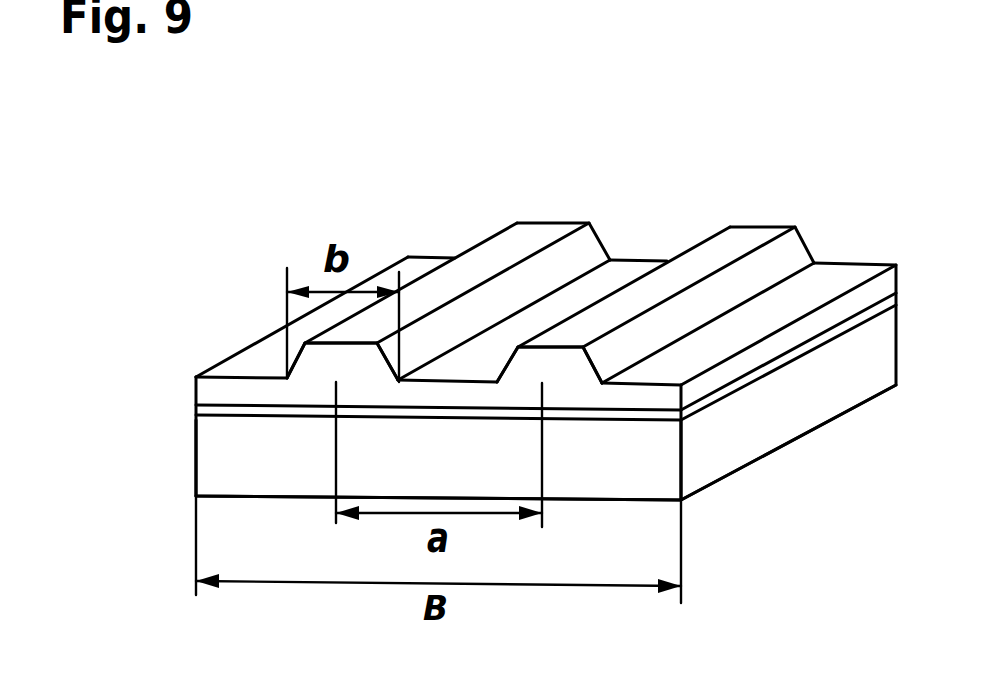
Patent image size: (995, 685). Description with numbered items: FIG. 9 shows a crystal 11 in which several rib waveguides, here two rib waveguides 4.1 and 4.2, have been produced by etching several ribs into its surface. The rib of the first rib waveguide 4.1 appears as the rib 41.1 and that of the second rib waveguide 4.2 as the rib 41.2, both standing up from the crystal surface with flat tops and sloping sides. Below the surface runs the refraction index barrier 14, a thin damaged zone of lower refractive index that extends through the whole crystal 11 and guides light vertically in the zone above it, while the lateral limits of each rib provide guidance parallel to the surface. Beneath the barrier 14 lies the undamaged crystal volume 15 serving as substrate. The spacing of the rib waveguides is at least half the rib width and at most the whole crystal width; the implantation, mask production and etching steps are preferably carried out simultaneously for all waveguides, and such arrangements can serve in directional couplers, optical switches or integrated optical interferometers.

The crystal 11 is at (546, 419).
The refraction index barrier 14 is at (222, 409).
The undamaged crystal volume 15 is at (220, 470).
The rib waveguide 4.1 is at (456, 209).
The rib waveguide 4.2 is at (662, 207).
The flank of first ridge 41.1 is at (350, 367).
The flank of second ridge 41.2 is at (547, 377).